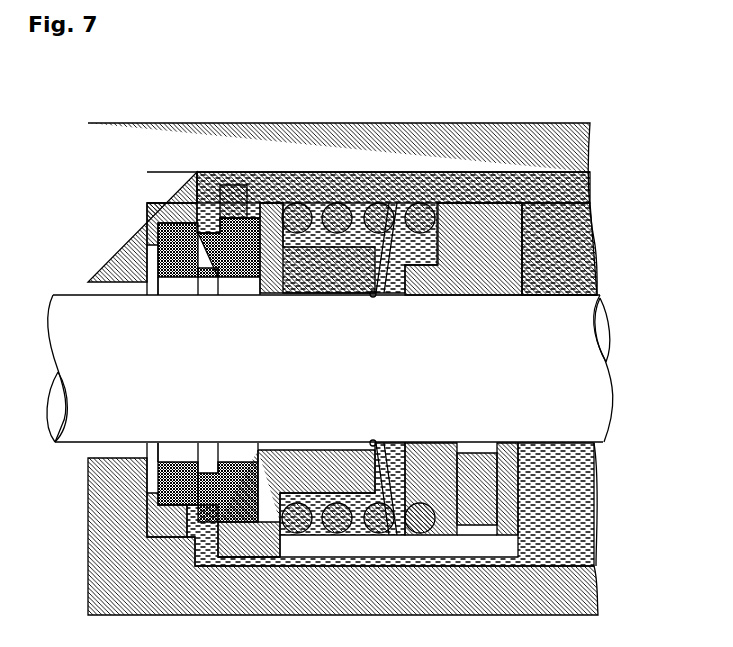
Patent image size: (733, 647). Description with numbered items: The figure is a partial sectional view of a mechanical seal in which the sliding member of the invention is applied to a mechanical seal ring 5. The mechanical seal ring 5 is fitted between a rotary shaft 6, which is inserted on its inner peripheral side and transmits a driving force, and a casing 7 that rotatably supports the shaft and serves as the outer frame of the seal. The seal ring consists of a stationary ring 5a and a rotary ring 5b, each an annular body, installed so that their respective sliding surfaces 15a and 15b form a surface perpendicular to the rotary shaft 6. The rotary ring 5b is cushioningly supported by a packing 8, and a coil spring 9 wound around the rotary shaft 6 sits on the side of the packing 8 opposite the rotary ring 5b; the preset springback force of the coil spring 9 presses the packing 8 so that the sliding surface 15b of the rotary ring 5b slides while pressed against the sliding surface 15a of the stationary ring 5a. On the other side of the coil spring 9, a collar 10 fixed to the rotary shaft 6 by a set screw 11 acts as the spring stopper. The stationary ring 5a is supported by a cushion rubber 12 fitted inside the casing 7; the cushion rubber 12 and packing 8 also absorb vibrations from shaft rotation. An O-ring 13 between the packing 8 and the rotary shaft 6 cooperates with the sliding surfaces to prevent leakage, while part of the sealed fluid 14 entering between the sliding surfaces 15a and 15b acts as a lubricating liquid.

The mechanical seal ring 5 is at (225, 282).
The stationary ring 5a is at (178, 222).
The rotary ring 5b is at (247, 225).
The rotary shaft 6 is at (90, 333).
The casing 7 is at (108, 192).
The packing 8 is at (275, 228).
The coil spring 9 is at (388, 200).
The collar 10 is at (525, 248).
The set screw 11 is at (530, 482).
The cushion rubber 12 is at (163, 203).
The O-ring 13 is at (375, 296).
The sealed fluid 14 is at (508, 253).
The sliding surface 15a is at (213, 437).
The sliding surface 15b is at (148, 248).